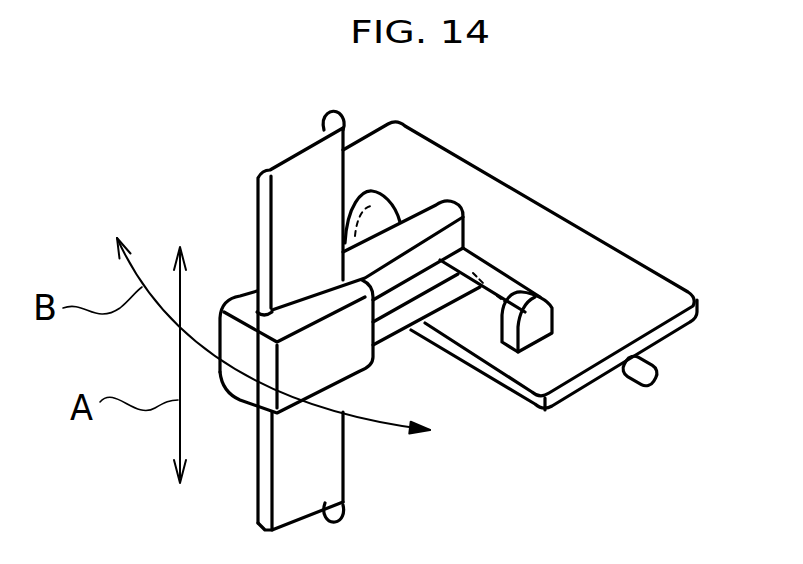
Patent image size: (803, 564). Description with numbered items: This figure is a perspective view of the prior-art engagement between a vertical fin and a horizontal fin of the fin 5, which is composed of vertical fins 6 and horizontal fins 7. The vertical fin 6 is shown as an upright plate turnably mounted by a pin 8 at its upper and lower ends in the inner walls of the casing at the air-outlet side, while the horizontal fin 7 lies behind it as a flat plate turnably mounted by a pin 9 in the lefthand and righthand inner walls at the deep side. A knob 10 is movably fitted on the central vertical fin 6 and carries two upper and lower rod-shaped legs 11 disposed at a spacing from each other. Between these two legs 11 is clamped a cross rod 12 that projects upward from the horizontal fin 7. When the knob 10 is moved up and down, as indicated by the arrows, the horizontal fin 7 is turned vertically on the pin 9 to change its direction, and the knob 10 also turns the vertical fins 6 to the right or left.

The fin 5 is at (377, 120).
The vertical fin 6 is at (272, 160).
The horizontal fin 7 is at (548, 227).
The pin 8 is at (328, 114).
The pin 9 is at (645, 375).
The knob 10 is at (232, 398).
The rod-shaped leg 11 is at (447, 215).
The cross rod 12 is at (500, 283).